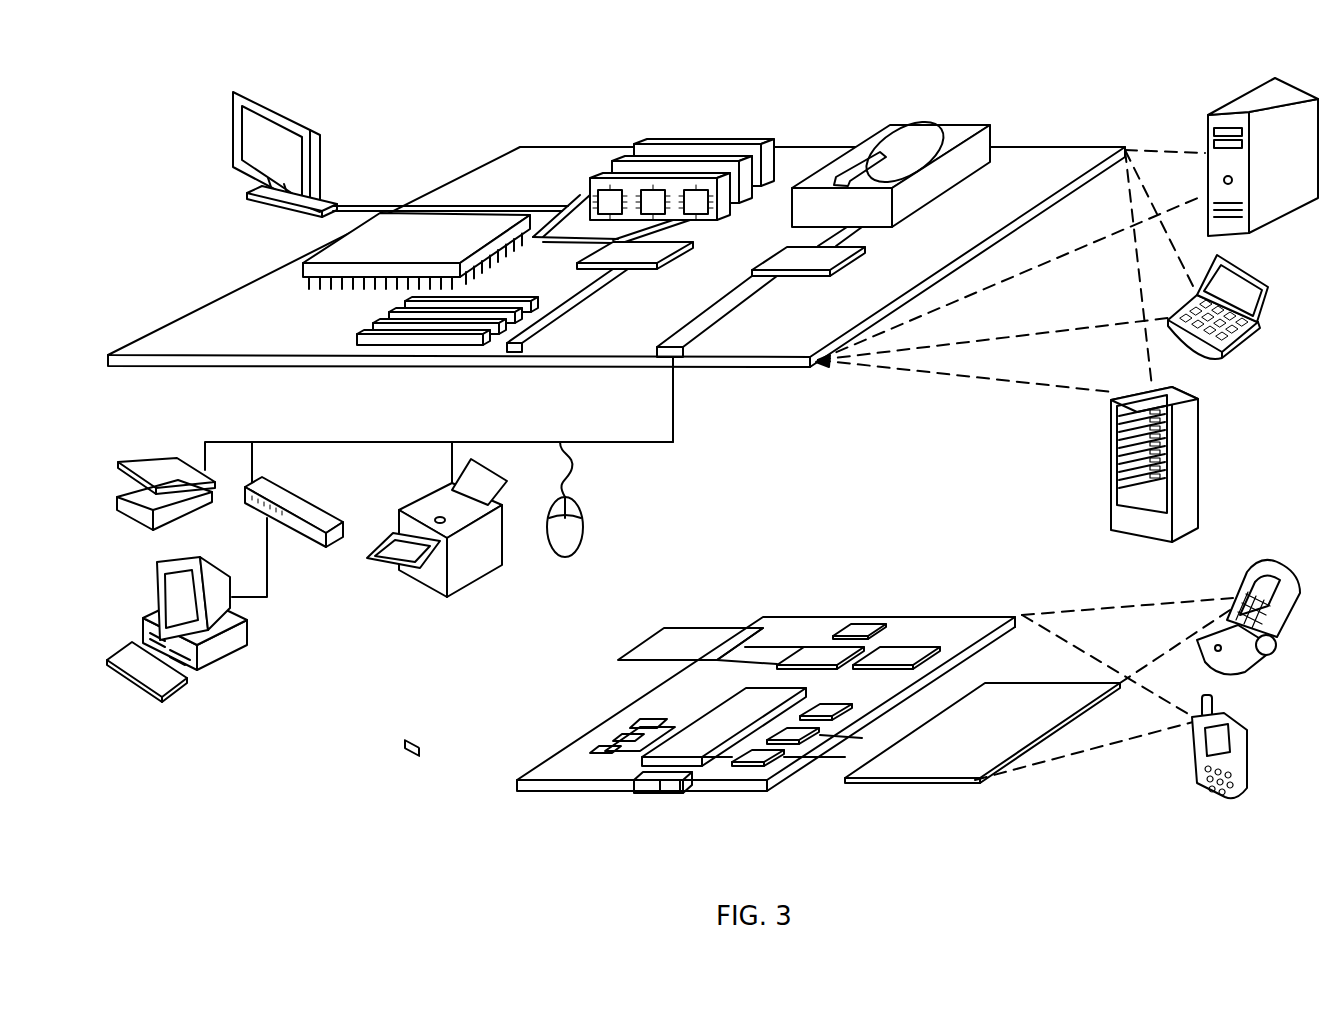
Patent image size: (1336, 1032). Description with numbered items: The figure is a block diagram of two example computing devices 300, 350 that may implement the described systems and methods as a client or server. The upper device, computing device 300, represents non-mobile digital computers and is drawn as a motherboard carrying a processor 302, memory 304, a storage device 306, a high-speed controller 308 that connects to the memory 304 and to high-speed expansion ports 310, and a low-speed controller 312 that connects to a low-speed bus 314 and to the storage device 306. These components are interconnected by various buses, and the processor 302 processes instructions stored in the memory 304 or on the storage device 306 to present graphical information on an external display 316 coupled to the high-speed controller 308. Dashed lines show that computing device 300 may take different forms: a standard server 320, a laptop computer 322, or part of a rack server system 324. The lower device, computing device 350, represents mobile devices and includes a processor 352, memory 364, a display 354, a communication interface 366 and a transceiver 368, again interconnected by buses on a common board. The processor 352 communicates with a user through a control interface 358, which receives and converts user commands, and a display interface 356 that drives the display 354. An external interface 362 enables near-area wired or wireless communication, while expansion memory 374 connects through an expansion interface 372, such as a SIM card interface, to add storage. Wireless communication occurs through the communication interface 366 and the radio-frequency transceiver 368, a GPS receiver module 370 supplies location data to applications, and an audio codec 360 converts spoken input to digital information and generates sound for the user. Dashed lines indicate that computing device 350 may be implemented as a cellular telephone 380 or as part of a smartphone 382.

The computing device 300 is at (135, 99).
The processor 302 is at (305, 266).
The memory 304 is at (646, 146).
The storage device 306 is at (888, 128).
The high-speed controller 308 is at (612, 254).
The high-speed expansion ports 310 is at (368, 329).
The low-speed controller 312 is at (788, 252).
The low-speed bus 314 is at (676, 358).
The display 316 is at (238, 93).
The standard server 320 is at (1210, 134).
The laptop computer 322 is at (1272, 288).
The rack server system 324 is at (1112, 484).
The computing device 350 is at (492, 806).
The processor 352 is at (697, 748).
The display 354 is at (940, 766).
The display interface 356 is at (766, 755).
The control interface 358 is at (800, 737).
The audio codec 360 is at (827, 712).
The external interface 362 is at (660, 775).
The memory 364 is at (612, 742).
The communication interface 366 is at (818, 655).
The transceiver 368 is at (896, 657).
The GPS receiver module 370 is at (874, 630).
The expansion interface 372 is at (745, 630).
The expansion memory 374 is at (668, 631).
The cellular telephone 380 is at (1248, 572).
The smartphone 382 is at (1193, 750).